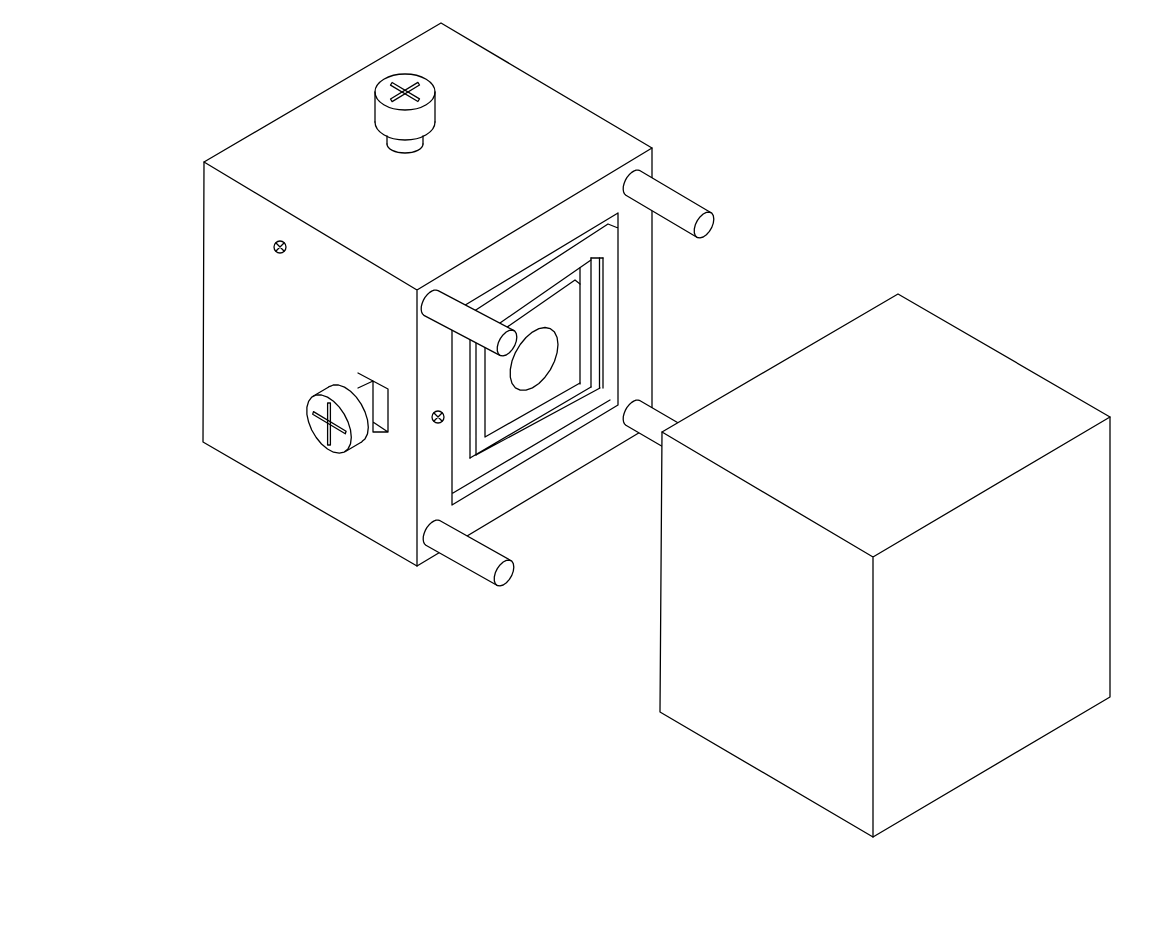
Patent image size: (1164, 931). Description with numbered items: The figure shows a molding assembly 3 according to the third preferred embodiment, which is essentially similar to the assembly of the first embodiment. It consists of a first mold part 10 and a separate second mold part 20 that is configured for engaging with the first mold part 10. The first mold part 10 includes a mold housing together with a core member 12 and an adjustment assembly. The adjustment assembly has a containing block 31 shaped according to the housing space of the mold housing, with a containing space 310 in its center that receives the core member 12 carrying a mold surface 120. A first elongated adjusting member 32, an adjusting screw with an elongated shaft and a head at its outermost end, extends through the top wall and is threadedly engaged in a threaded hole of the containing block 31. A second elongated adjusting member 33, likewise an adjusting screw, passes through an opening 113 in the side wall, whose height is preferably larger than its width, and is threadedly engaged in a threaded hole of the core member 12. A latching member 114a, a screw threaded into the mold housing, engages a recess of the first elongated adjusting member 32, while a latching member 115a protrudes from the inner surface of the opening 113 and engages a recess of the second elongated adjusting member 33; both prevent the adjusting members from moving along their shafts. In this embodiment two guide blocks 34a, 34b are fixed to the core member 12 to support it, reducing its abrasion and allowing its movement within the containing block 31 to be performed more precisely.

The molding assembly 3 is at (646, 54).
The first mold part 10 is at (599, 111).
The core member 12 is at (616, 341).
The mold surface 120 is at (543, 353).
The second mold part 20 is at (998, 337).
The containing block 31 is at (595, 385).
The containing space 310 is at (587, 380).
The first elongated adjusting member 32 is at (380, 110).
The second elongated adjusting member 33 is at (360, 430).
The guide block 34a is at (481, 435).
The guide block 34b is at (588, 380).
The opening 113 is at (362, 381).
The latching member 114a is at (274, 245).
The latching member 115a is at (437, 423).